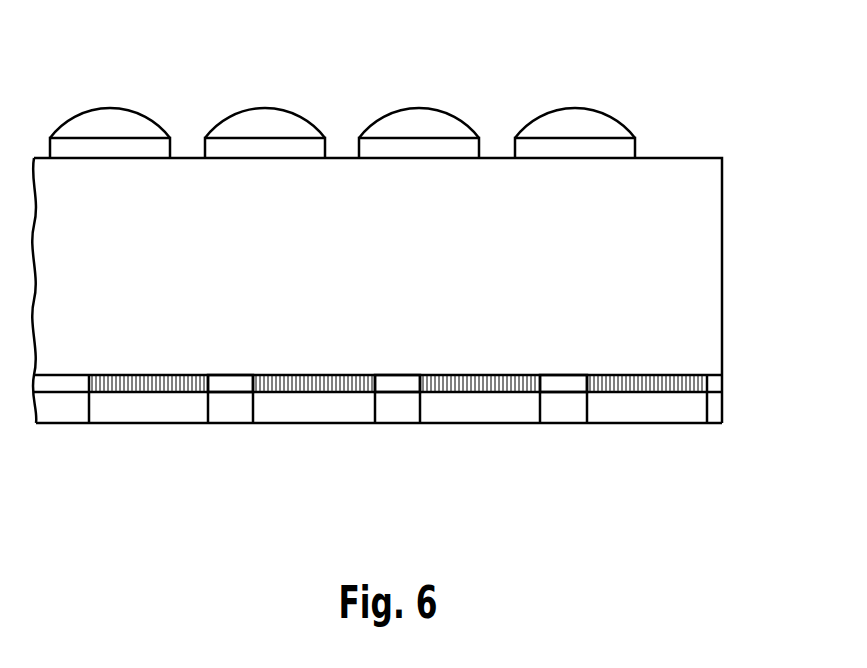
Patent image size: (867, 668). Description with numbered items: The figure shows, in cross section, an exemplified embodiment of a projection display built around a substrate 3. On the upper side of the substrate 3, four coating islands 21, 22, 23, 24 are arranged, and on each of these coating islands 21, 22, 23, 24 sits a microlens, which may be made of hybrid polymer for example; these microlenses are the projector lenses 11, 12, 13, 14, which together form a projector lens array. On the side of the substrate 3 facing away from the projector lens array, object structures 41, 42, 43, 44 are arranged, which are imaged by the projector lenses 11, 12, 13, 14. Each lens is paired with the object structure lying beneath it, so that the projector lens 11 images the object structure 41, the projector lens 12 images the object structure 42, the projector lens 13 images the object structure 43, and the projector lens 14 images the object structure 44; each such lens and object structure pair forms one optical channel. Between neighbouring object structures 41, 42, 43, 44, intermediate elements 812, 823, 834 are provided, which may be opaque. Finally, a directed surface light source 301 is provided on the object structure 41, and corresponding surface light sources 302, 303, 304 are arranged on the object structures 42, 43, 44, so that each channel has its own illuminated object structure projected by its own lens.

The substrate 3 is at (698, 280).
The projector lens 11 is at (100, 125).
The projector lens 12 is at (255, 125).
The projector lens 13 is at (409, 125).
The projector lens 14 is at (565, 125).
The coating island 21 is at (133, 150).
The coating island 22 is at (288, 150).
The coating island 23 is at (442, 150).
The coating island 24 is at (598, 150).
The object structure 41 is at (113, 383).
The object structure 42 is at (282, 383).
The object structure 43 is at (447, 383).
The object structure 44 is at (610, 383).
The intermediate element 812 is at (230, 383).
The intermediate element 823 is at (397, 383).
The intermediate element 834 is at (563, 383).
The directed surface light source 301 is at (158, 412).
The surface light source 302 is at (325, 412).
The surface light source 303 is at (492, 412).
The surface light source 304 is at (655, 412).